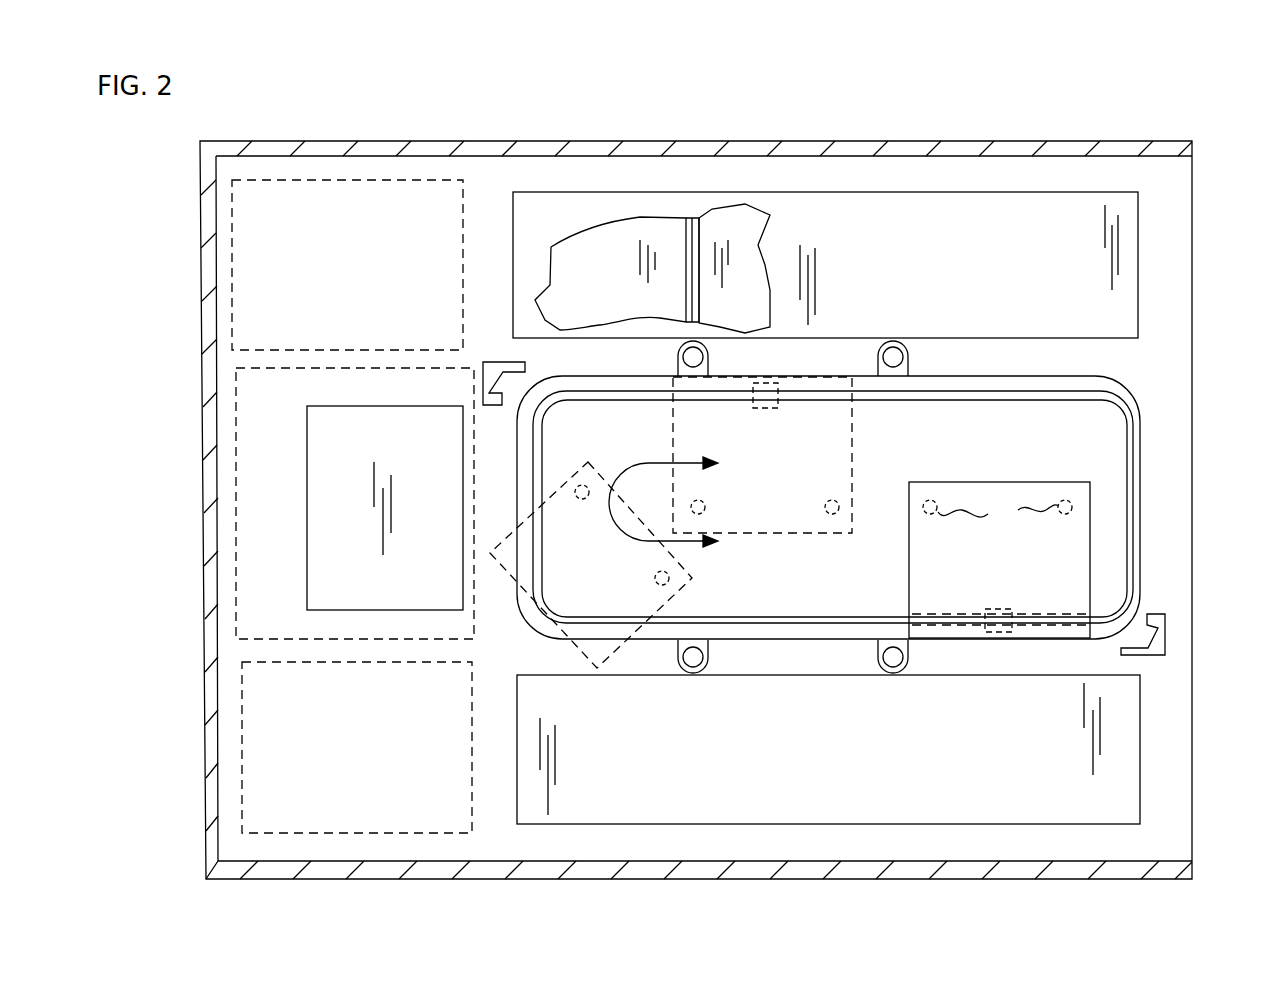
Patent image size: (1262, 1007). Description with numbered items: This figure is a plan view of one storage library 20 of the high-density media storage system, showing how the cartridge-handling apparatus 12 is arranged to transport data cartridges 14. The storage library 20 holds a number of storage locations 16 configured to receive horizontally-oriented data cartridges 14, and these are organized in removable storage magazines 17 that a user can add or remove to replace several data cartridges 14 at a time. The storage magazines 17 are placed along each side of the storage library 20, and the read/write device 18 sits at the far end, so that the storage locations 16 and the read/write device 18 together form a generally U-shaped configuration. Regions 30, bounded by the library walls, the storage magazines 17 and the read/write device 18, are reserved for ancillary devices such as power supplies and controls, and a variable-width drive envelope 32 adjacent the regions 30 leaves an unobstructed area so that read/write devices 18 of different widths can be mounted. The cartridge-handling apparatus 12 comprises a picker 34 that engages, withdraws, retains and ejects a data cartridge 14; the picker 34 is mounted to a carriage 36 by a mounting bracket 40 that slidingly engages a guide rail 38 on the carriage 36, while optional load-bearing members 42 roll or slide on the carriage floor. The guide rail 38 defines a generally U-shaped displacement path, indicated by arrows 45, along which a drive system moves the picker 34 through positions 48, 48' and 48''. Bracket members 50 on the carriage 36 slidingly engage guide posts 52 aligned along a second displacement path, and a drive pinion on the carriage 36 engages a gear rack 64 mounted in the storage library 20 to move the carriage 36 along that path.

The cartridge-handling apparatus 12 is at (1152, 503).
The data cartridge 14 is at (578, 298).
The storage location 16 is at (666, 215).
The storage magazine 17 is at (920, 192).
The read/write device 18 is at (307, 583).
The storage library 20 is at (816, 139).
The region 30 is at (233, 228).
The variable-width drive envelope 32 is at (236, 404).
The picker 34 is at (1009, 481).
The carriage 36 is at (1142, 467).
The guide rail 38 is at (1068, 400).
The mounting bracket 40 is at (990, 609).
The load-bearing member 42 is at (997, 515).
The flow path 45 is at (632, 468).
The position 48 is at (742, 543).
The position 48' is at (762, 474).
The position 48'' is at (638, 565).
The bracket member 50 is at (908, 360).
The guide post 52 is at (893, 341).
The gear rack 64 is at (1150, 614).